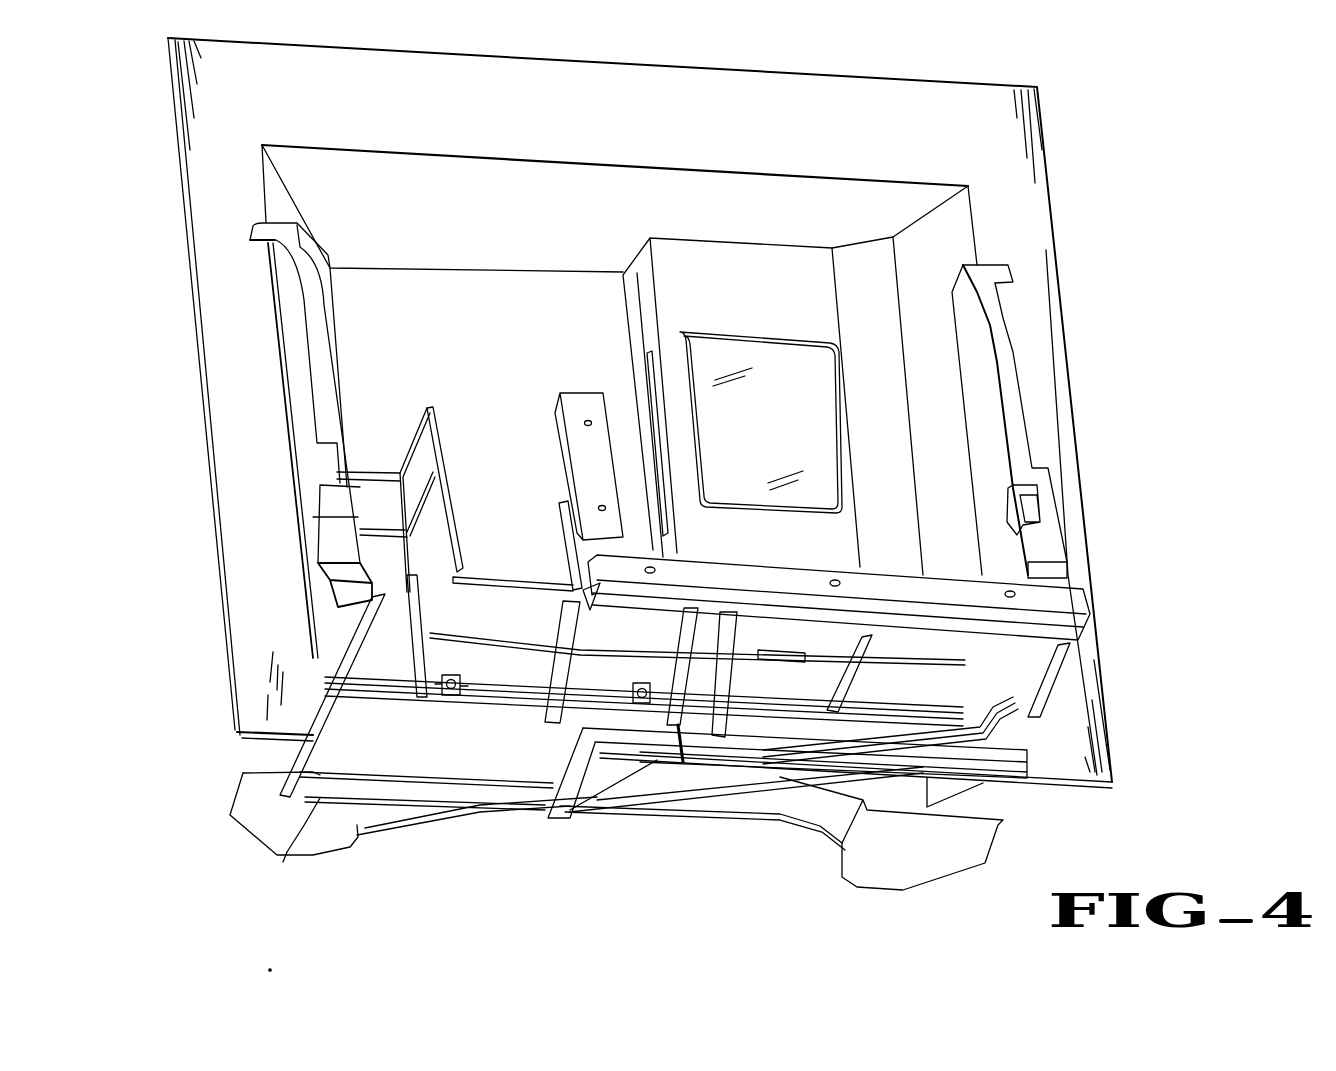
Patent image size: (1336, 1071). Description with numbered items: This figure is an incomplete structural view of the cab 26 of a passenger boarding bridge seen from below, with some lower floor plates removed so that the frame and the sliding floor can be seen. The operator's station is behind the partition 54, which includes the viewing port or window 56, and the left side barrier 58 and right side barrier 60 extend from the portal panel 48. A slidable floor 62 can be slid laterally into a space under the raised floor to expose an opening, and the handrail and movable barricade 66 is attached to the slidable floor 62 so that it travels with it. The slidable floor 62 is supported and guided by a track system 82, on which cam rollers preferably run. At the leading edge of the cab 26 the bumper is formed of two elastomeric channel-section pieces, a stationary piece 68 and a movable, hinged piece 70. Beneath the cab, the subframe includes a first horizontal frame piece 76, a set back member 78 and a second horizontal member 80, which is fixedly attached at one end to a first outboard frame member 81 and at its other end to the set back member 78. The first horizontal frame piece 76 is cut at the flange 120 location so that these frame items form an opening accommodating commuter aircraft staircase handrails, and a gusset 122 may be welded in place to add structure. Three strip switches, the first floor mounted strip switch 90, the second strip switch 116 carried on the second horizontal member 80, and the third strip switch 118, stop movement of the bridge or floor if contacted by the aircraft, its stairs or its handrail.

The cab 26 is at (682, 413).
The portal panel 48 is at (580, 130).
The partition 54 is at (773, 406).
The viewing port or window 56 is at (788, 444).
The left side barrier 58 is at (1013, 270).
The right side barrier 60 is at (250, 230).
The slidable floor 62 is at (536, 578).
The handrail and movable barricade 66 is at (430, 412).
The stationary bumper piece 68 is at (1075, 598).
The movable hinged bumper piece 70 is at (578, 392).
The first horizontal frame piece 76 is at (665, 760).
The set back member 78 is at (555, 797).
The second horizontal member 80 is at (290, 848).
The first outboard frame member 81 is at (297, 762).
The track system 82 is at (402, 676).
The first floor mounted strip switch 90 is at (537, 667).
The second strip switch 116 is at (473, 795).
The third strip switch 118 is at (362, 607).
The flange 120 is at (700, 748).
The gusset 122 is at (603, 778).